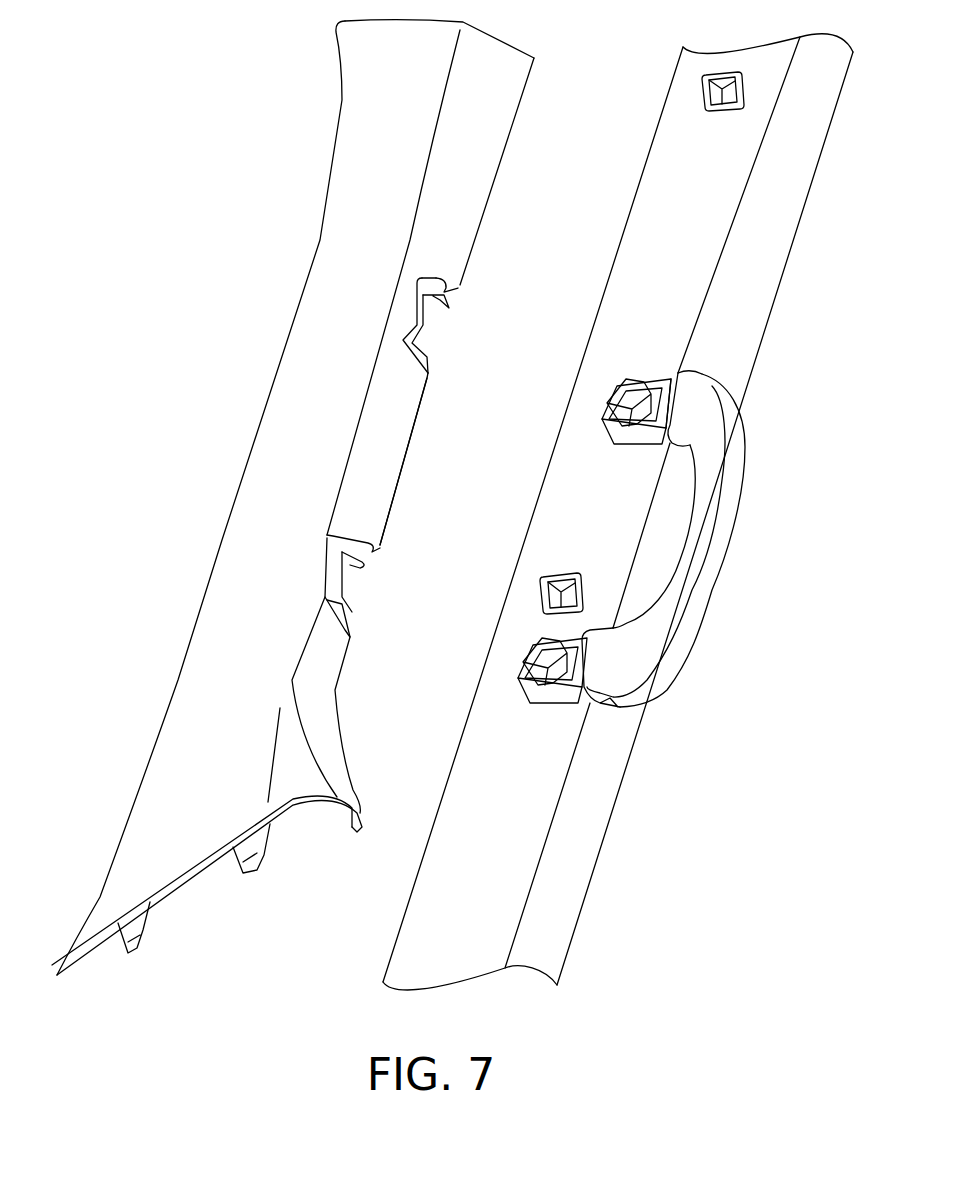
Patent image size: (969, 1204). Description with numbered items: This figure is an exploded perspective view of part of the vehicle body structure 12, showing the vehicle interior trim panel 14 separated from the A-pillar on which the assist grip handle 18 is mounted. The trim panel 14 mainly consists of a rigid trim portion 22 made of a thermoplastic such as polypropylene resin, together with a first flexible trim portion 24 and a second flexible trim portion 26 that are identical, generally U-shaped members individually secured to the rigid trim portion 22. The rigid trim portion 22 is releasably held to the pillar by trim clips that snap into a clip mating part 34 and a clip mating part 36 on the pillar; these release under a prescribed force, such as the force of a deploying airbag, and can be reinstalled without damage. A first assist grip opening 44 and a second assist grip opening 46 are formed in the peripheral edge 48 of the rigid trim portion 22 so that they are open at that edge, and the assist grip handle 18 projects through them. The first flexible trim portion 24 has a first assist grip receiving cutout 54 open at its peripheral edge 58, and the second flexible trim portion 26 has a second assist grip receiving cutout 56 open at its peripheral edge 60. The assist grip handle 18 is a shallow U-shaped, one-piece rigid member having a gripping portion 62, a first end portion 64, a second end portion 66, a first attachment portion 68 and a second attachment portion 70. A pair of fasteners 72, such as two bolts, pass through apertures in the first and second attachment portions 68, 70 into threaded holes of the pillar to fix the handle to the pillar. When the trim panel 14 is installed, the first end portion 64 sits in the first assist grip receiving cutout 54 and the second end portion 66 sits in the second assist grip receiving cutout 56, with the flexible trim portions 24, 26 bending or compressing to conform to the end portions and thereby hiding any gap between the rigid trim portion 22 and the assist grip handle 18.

The vehicle body structure 12 is at (232, 86).
The vehicle interior trim panel 14 is at (322, 183).
The assist grip handle 18 is at (741, 501).
The rigid trim portion 22 is at (312, 335).
The first flexible trim portion 24 is at (443, 295).
The second flexible trim portion 26 is at (343, 620).
The clip mating part 34 is at (705, 88).
The clip mating part 36 is at (540, 595).
The first assist grip opening 44 is at (440, 287).
The second assist grip opening 46 is at (342, 600).
The peripheral edge 48 is at (398, 488).
The first assist grip receiving cutout 54 is at (427, 348).
The second assist grip receiving cutout 56 is at (348, 577).
The peripheral edge 58 is at (430, 372).
The peripheral edge 60 is at (366, 560).
The gripping portion 62 is at (694, 548).
The first end portion 64 is at (692, 402).
The second end portion 66 is at (607, 657).
The first attachment portion 68 is at (650, 373).
The second attachment portion 70 is at (550, 690).
The fasteners 72 is at (621, 396).